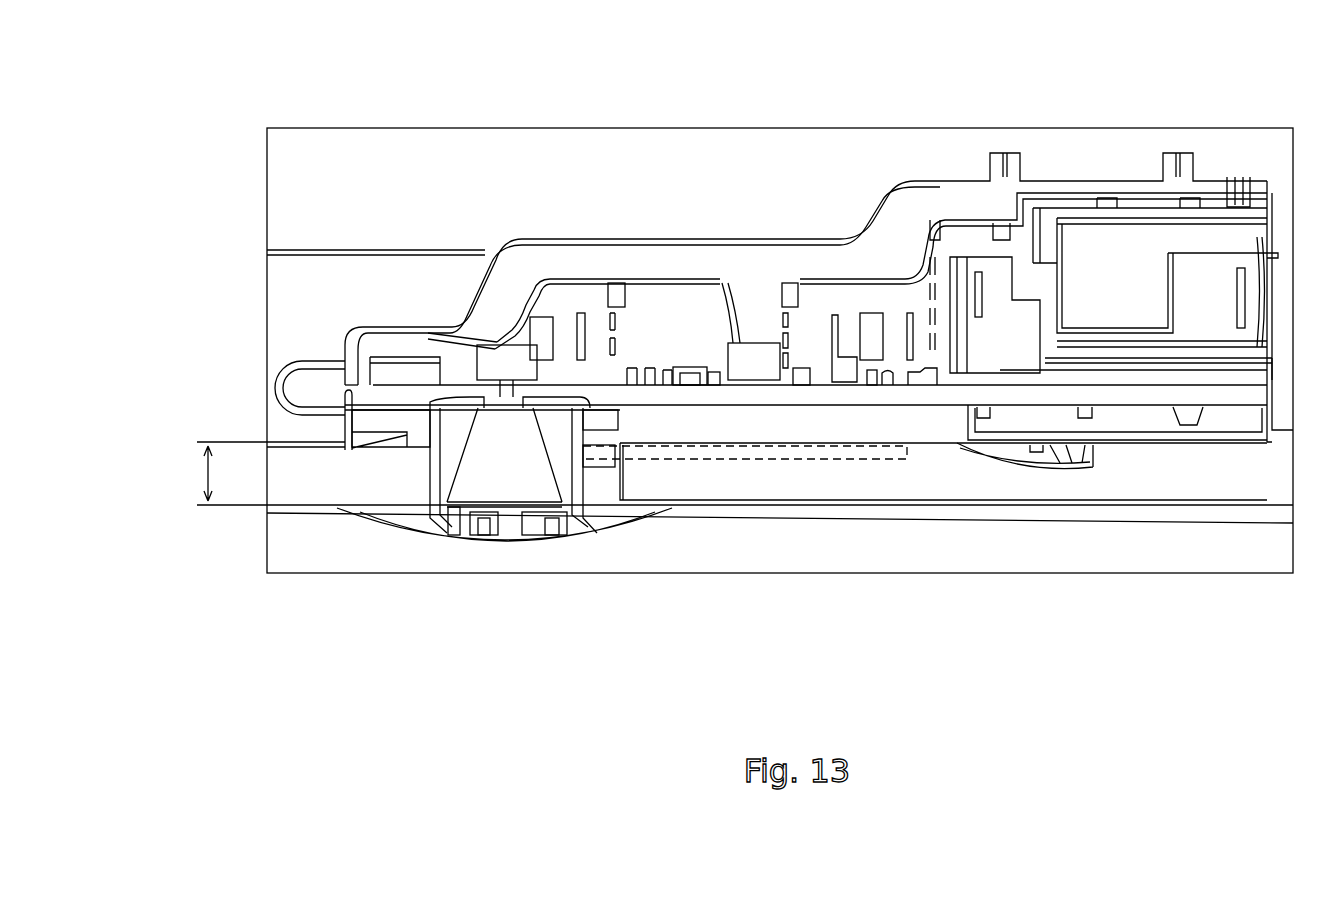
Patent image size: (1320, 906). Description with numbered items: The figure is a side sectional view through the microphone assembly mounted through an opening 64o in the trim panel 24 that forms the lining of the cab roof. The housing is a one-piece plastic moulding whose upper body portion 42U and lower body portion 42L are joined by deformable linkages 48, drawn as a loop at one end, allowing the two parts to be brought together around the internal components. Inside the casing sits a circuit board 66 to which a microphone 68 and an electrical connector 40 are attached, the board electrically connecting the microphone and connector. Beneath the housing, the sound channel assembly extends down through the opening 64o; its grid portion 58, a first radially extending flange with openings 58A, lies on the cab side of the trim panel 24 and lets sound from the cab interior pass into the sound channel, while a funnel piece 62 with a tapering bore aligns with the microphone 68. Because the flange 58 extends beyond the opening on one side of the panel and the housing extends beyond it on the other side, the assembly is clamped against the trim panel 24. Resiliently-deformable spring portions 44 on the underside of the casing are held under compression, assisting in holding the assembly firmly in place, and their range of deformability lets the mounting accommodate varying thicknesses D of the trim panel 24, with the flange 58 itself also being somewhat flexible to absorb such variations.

The trim panel 24 is at (1157, 487).
The electrical connector 40 is at (1083, 297).
The upper body portion 42U is at (493, 250).
The lower body portion 42L is at (947, 418).
The spring portions 44 is at (718, 450).
The deformable linkages 48 is at (267, 376).
The grid portion 58 is at (593, 537).
The openings 58A is at (528, 540).
The funnel piece 62 is at (432, 533).
The opening 64o is at (427, 458).
The circuit board 66 is at (802, 377).
The microphone 68 is at (493, 340).
The thickness of trim panel D is at (220, 473).